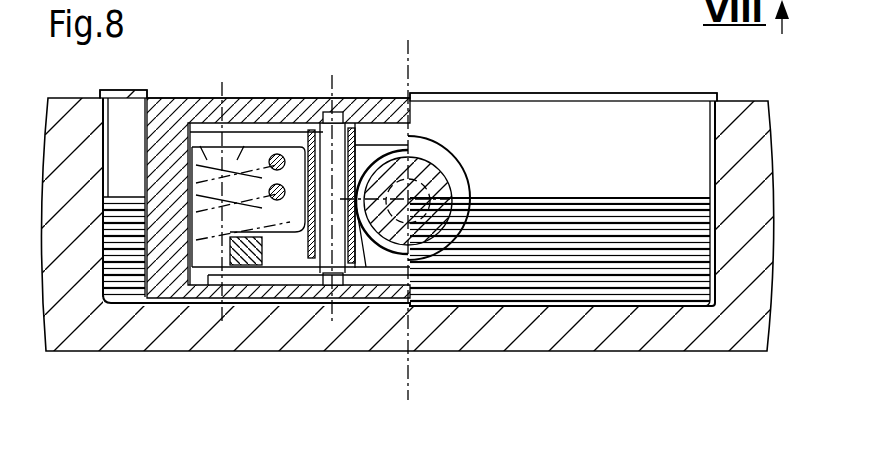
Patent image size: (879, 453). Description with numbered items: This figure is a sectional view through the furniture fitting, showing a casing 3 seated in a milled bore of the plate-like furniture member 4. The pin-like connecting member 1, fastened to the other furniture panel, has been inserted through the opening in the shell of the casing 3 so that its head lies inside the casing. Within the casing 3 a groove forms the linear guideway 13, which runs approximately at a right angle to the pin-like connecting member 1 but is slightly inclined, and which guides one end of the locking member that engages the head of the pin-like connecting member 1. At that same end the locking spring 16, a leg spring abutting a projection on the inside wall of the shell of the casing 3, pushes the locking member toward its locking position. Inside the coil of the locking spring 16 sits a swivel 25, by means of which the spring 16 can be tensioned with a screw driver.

The pin-like connecting member 1 is at (390, 228).
The casing 3 is at (625, 82).
The plate-like furniture member 4 is at (762, 217).
The guideway 13 is at (243, 278).
The locking spring 16 is at (278, 227).
The swivel 25 is at (213, 217).